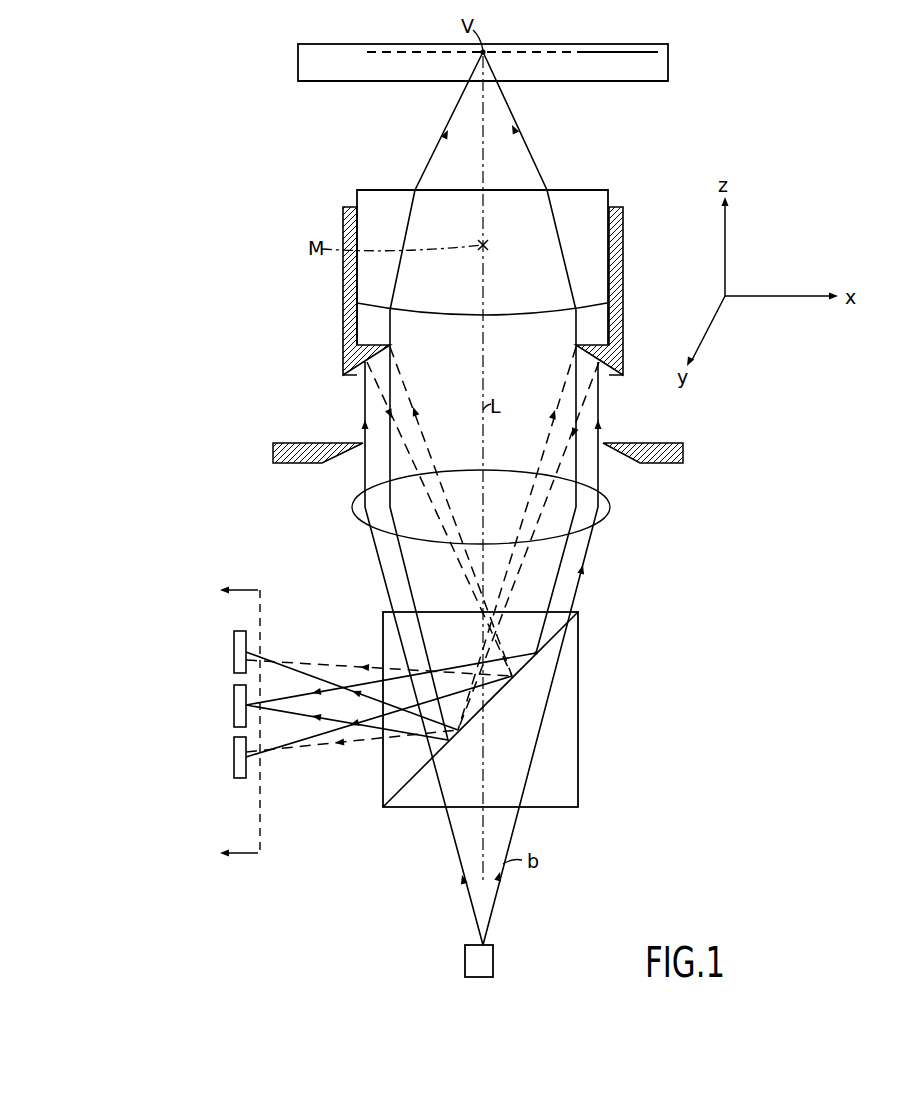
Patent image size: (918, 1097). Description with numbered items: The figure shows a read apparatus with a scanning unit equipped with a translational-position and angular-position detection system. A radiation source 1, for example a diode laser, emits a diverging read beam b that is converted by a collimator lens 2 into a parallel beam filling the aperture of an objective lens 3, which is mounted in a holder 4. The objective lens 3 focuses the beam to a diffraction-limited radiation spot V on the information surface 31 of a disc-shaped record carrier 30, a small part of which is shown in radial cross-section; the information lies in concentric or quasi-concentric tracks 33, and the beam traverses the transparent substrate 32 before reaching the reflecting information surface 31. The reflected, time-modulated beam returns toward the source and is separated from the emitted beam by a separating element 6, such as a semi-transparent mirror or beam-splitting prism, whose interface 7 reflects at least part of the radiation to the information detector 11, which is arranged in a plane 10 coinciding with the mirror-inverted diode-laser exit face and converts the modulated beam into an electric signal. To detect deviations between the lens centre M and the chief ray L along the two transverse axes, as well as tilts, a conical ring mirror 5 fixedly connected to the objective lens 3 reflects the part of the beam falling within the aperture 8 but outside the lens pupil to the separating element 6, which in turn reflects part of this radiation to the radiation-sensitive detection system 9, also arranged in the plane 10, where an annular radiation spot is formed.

The radiation source 1 is at (495, 961).
The collimator lens 2 is at (606, 503).
The objective lens 3 is at (370, 279).
The holder 4 is at (352, 319).
The ring mirror 5 is at (358, 370).
The separating element 6 is at (563, 732).
The interface 7 is at (537, 653).
The aperture 8 is at (273, 452).
The radiation-sensitive detection system 9 is at (234, 645).
The plane 10 is at (247, 803).
The information detector 11 is at (234, 697).
The record carrier 30 is at (670, 27).
The information surface 31 is at (630, 50).
The transparent substrate 32 is at (625, 74).
The tracks 33 is at (547, 38).